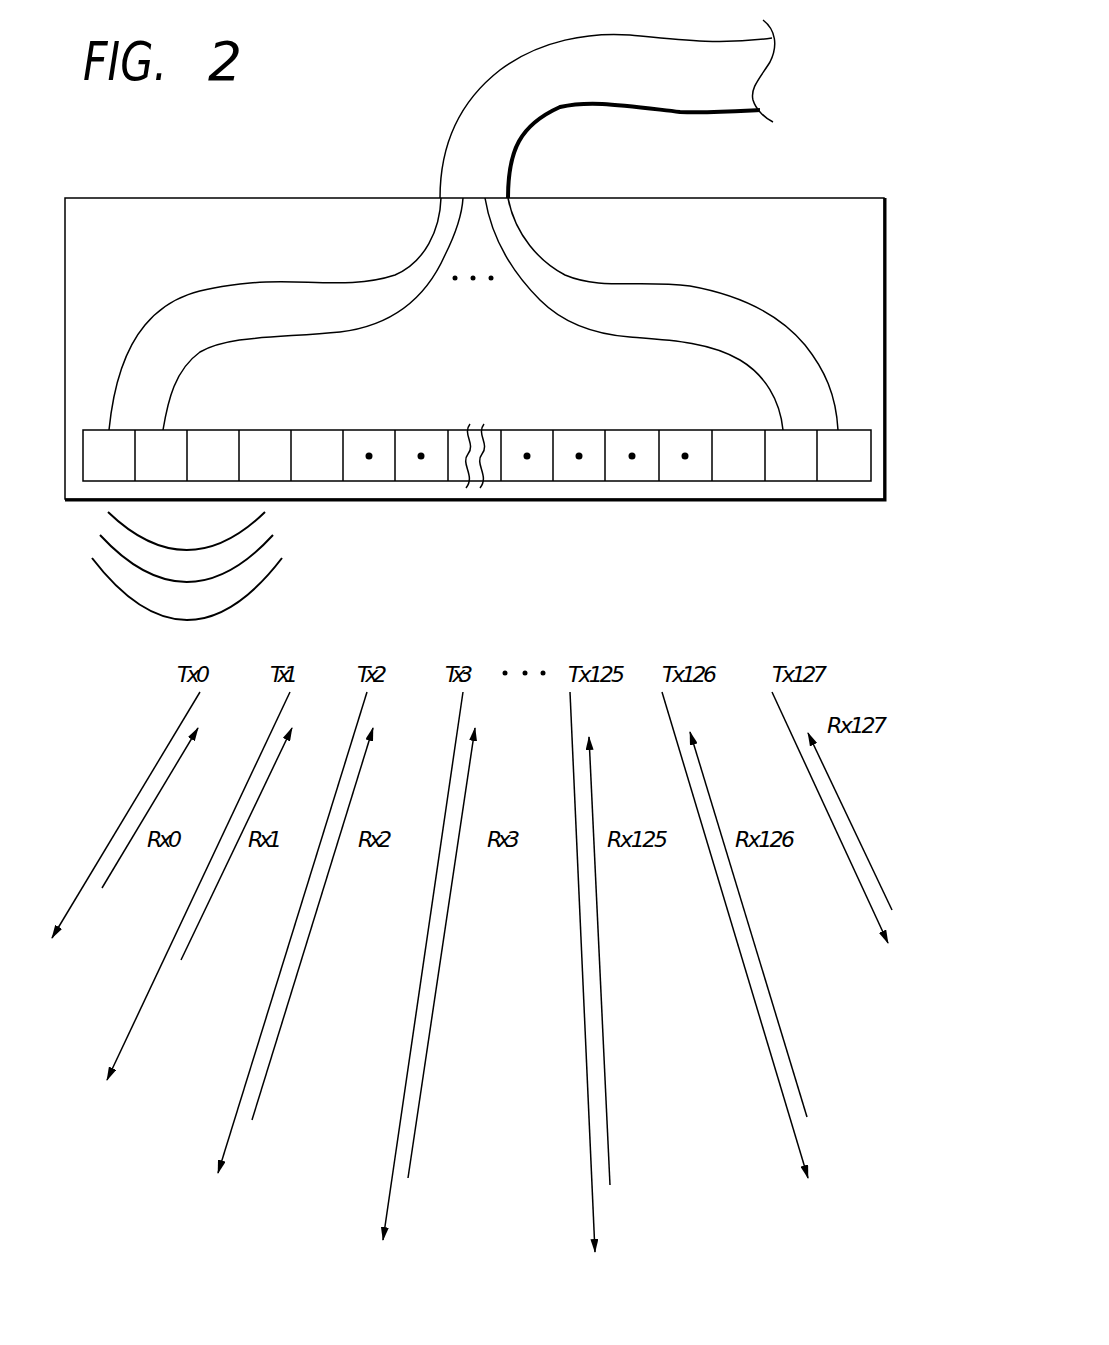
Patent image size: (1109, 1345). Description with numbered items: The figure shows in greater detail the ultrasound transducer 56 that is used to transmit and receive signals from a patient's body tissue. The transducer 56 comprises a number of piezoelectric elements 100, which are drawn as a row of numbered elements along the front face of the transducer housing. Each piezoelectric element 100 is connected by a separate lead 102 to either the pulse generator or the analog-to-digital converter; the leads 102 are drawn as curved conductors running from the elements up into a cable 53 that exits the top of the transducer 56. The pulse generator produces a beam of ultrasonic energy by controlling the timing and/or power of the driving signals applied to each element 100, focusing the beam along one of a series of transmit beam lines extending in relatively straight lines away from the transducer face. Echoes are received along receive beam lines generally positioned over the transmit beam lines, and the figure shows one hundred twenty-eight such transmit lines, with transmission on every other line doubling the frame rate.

The cable 53 is at (462, 106).
The ultrasound transducer 56 is at (885, 457).
The piezoelectric elements 100 is at (100, 437).
The lead 102 is at (157, 327).